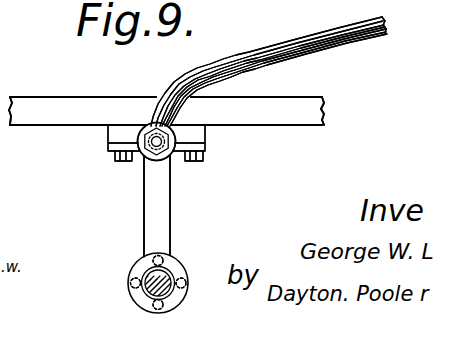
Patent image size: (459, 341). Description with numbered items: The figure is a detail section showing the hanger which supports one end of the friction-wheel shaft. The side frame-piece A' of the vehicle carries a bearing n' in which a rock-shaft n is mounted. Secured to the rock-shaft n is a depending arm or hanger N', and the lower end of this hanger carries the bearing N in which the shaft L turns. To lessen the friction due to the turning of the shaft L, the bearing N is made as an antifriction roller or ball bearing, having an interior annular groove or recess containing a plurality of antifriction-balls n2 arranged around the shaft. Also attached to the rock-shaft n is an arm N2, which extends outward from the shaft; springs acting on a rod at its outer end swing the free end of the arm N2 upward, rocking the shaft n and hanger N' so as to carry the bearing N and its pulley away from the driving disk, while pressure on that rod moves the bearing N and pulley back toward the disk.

The rock-shaft n is at (150, 110).
The bearing n' is at (139, 142).
The arm N2 is at (278, 38).
The side frame-piece A' is at (166, 111).
The depending arm or hanger N' is at (179, 206).
The bearing N is at (169, 269).
The shaft L is at (147, 275).
The antifriction-balls n2 is at (187, 276).